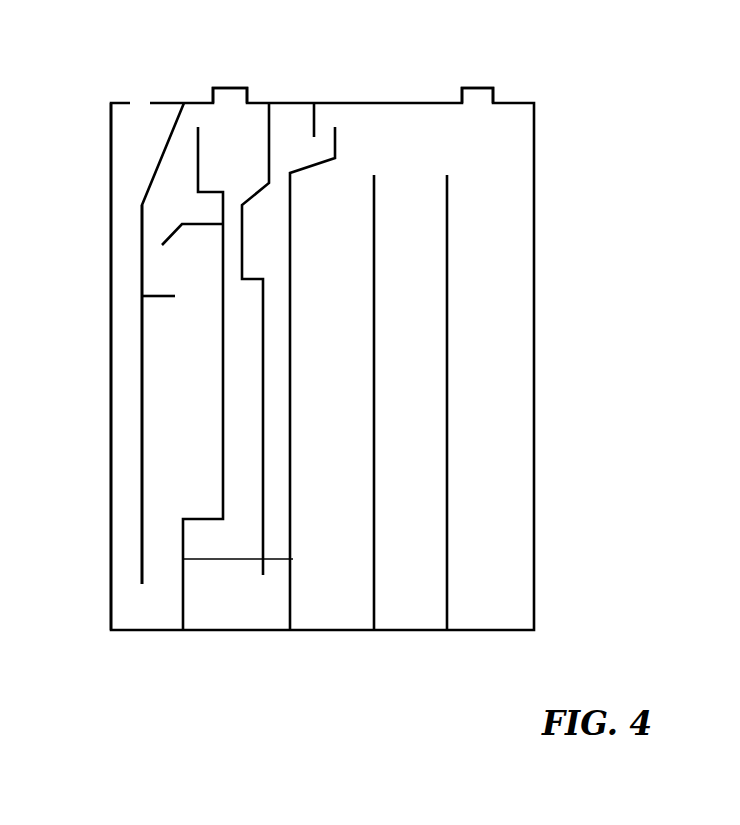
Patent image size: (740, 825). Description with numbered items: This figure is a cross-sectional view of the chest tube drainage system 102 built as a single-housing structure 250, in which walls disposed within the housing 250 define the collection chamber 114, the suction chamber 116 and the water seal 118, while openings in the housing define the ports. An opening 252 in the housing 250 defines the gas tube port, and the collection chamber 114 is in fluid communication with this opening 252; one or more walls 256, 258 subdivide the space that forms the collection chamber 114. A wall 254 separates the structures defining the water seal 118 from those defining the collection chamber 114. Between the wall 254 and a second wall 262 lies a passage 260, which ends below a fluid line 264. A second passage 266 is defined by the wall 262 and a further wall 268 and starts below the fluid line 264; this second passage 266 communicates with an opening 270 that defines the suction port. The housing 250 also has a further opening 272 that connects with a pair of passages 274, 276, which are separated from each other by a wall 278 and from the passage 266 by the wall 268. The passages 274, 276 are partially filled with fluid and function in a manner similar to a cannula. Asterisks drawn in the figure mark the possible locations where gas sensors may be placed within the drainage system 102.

The chest tube drainage system 102 is at (568, 68).
The collection chamber 114 is at (508, 172).
The suction chamber 116 is at (136, 616).
The water seal 118 is at (241, 617).
The single-housing structure 250 is at (535, 397).
The opening 252 is at (475, 95).
The wall 254 is at (291, 392).
The wall 256 is at (375, 278).
The wall 258 is at (448, 276).
The passage 260 is at (270, 238).
The second wall 262 is at (263, 353).
The fluid line 264 is at (272, 557).
The second passage 266 is at (238, 128).
The second wall 268 is at (223, 332).
The opening 270 is at (218, 90).
The further opening 272 is at (150, 117).
The passage 274 is at (163, 387).
The passage 276 is at (127, 437).
The wall 278 is at (142, 466).